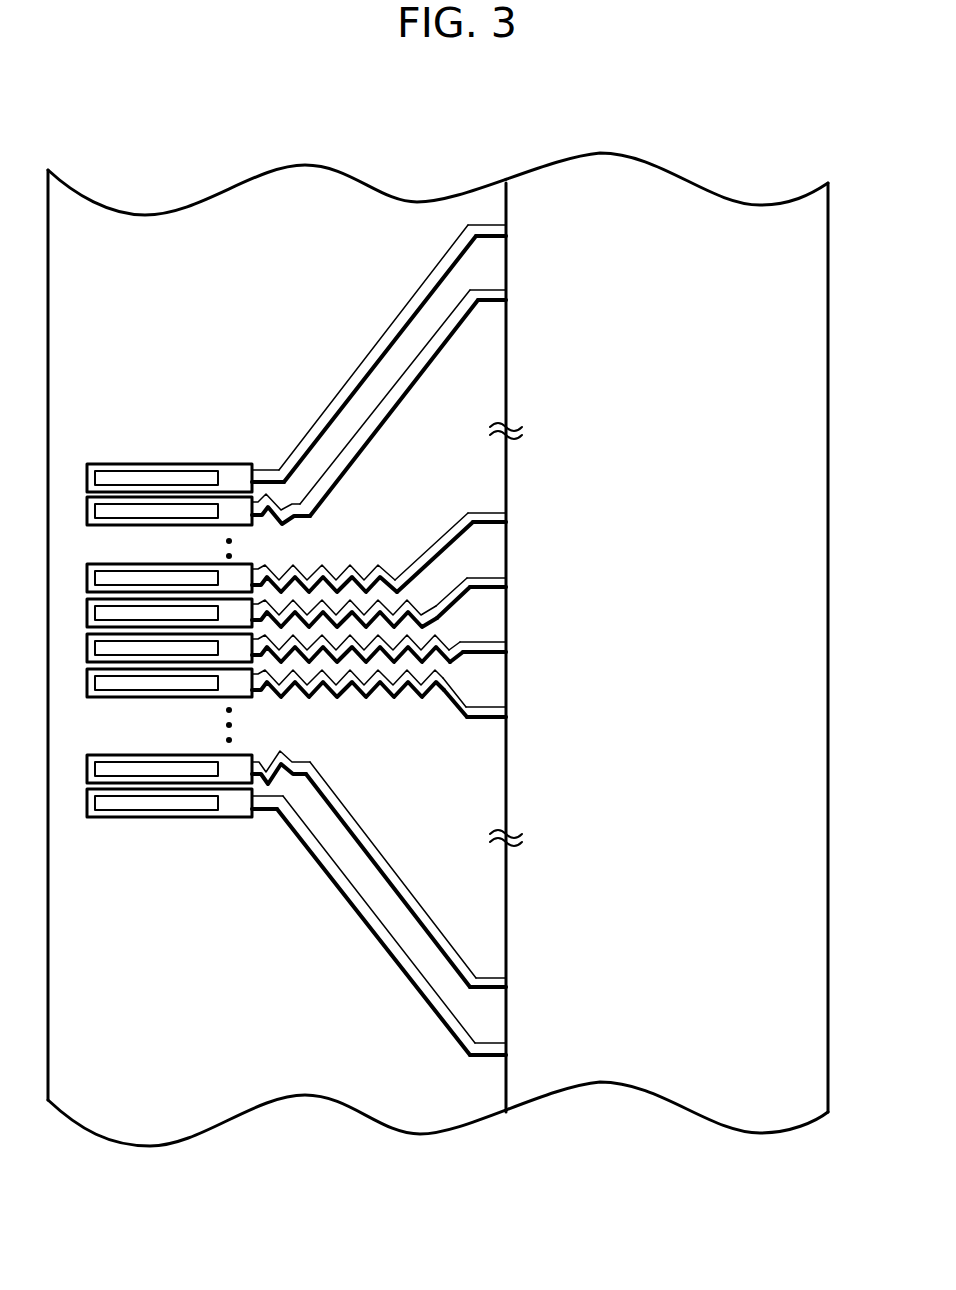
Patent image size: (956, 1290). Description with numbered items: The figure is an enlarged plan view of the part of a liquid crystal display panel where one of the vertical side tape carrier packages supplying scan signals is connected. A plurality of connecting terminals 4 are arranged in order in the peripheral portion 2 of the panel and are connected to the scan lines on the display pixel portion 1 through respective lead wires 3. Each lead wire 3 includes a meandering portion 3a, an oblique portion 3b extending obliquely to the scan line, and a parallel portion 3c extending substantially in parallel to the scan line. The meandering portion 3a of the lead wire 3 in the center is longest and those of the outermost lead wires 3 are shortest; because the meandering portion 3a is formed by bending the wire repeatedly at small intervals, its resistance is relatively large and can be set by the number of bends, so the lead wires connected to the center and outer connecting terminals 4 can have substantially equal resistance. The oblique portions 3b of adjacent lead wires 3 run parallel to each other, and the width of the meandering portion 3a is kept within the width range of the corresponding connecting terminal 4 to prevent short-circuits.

The display pixel portion 1 is at (614, 1076).
The peripheral portion 2 is at (231, 1108).
The lead wire 3 is at (412, 640).
The meandering portion 3a is at (378, 566).
The oblique portion 3b is at (430, 357).
The parallel portion 3c is at (490, 522).
The connecting terminal 4 is at (237, 473).